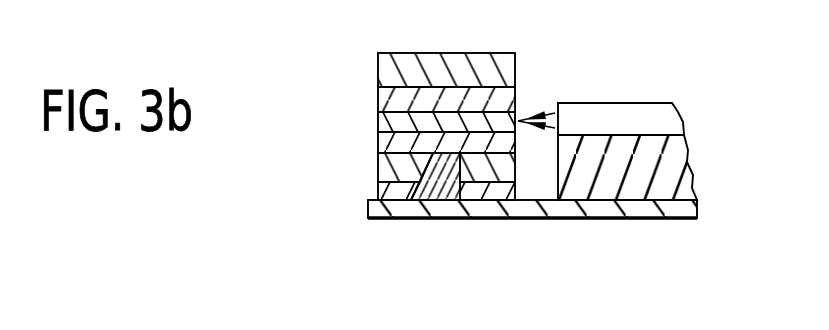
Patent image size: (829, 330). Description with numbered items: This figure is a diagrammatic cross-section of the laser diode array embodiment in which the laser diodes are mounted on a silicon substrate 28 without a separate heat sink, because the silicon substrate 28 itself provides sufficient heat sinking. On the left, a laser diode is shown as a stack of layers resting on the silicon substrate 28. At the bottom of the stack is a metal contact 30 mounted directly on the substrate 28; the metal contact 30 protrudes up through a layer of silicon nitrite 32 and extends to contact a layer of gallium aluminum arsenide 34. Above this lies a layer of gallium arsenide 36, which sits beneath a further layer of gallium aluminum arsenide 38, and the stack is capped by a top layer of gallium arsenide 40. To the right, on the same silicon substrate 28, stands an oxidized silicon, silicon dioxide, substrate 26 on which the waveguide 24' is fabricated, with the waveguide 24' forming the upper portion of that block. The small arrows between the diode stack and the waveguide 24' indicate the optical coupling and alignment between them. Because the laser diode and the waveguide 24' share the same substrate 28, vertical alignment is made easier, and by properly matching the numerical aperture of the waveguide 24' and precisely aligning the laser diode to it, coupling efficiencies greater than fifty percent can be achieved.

The top layer of gallium arsenide 40 is at (453, 64).
The layer of gallium aluminum arsenide 38 is at (378, 100).
The layer of gallium arsenide 36 is at (385, 122).
The layer of gallium aluminum arsenide 34 is at (385, 144).
The layer of silicon nitrite 32 is at (386, 168).
The metal contact 30 is at (385, 192).
The silicon substrate 28 is at (413, 205).
The oxidized silicon substrate 26 is at (638, 192).
The waveguide 24' is at (621, 95).